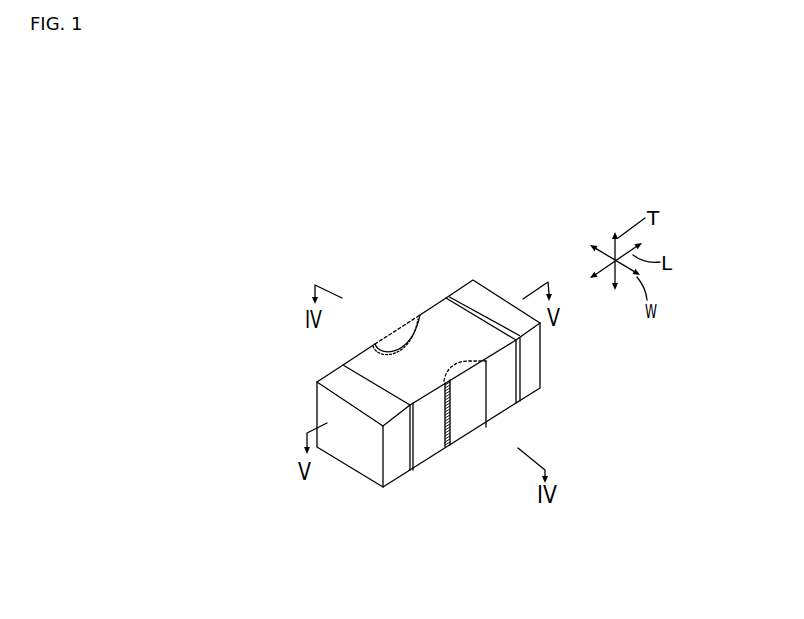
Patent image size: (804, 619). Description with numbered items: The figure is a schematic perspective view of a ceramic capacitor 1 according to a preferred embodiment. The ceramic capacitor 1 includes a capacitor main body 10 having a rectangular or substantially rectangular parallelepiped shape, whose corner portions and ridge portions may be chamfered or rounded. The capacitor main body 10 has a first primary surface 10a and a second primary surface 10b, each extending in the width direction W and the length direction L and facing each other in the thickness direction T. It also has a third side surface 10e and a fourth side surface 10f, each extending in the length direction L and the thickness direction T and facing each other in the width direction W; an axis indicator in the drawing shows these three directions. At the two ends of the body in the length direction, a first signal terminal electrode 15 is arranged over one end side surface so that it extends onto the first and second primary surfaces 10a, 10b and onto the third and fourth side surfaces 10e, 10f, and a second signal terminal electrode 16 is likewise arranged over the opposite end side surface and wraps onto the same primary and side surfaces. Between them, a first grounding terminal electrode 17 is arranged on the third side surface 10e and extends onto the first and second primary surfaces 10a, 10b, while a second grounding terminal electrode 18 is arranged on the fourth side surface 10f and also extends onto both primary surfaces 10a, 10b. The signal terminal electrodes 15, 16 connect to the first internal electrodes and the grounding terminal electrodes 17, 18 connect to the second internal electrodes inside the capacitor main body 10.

The ceramic capacitor 1 is at (494, 256).
The capacitor main body 10 is at (512, 418).
The first primary surface 10a is at (433, 327).
The second primary surface 10b is at (425, 465).
The third side surface 10e is at (368, 354).
The fourth side surface 10f is at (473, 438).
The first signal terminal electrode 15 is at (354, 483).
The second signal terminal electrode 16 is at (553, 385).
The first grounding terminal electrode 17 is at (403, 328).
The second grounding terminal electrode 18 is at (476, 447).